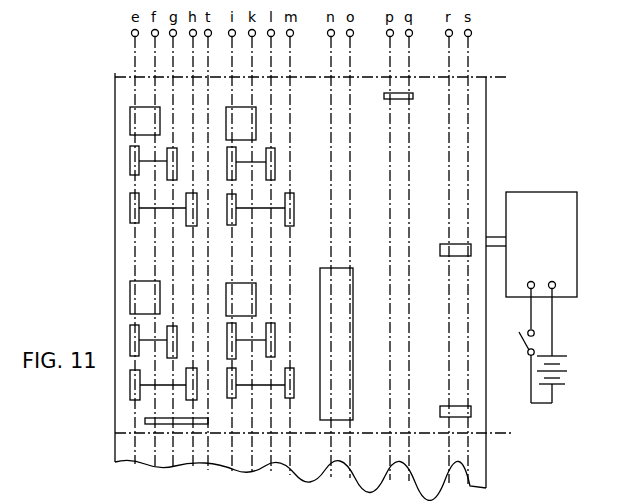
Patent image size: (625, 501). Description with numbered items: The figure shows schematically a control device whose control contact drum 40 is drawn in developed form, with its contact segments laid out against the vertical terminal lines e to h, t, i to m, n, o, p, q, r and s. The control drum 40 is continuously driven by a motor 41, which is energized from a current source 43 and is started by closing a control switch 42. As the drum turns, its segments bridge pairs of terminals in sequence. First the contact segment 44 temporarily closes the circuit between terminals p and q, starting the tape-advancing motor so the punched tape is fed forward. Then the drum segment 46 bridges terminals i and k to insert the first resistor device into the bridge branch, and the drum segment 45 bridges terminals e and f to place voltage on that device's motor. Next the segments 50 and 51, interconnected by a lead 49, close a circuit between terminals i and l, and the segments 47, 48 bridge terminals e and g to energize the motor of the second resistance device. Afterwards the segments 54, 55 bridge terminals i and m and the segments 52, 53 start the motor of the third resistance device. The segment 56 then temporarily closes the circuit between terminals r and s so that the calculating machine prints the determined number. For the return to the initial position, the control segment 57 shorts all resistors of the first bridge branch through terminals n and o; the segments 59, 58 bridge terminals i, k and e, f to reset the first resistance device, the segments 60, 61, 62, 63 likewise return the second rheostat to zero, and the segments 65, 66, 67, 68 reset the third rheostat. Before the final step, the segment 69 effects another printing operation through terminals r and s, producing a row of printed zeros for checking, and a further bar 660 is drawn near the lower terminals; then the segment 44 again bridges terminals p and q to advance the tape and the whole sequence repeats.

The control drum 40 is at (486, 103).
The motor 41 is at (522, 192).
The control switch 42 is at (530, 345).
The current source 43 is at (566, 363).
The contact segment 44 is at (400, 93).
The drum segment 45 is at (130, 118).
The drum segment 46 is at (256, 121).
The drum segment 47 is at (130, 156).
The drum segment 48 is at (167, 176).
The lead 49 is at (145, 168).
The drum segment 50 is at (228, 158).
The drum segment 51 is at (276, 162).
The drum segment 52 is at (130, 208).
The drum segment 53 is at (186, 221).
The drum segment 54 is at (228, 222).
The drum segment 55 is at (294, 217).
The drum segment 56 is at (445, 244).
The control segment 57 is at (353, 278).
The drum segment 58 is at (130, 293).
The drum segment 59 is at (226, 292).
The drum segment 60 is at (130, 340).
The drum segment 61 is at (167, 333).
The drum segment 62 is at (228, 328).
The drum segment 63 is at (276, 337).
The drum segment 65 is at (130, 380).
The drum segment 66 is at (186, 394).
The drum segment 67 is at (227, 398).
The drum segment 68 is at (294, 390).
The drum segment 69 is at (445, 406).
The contact bar 660 is at (145, 420).